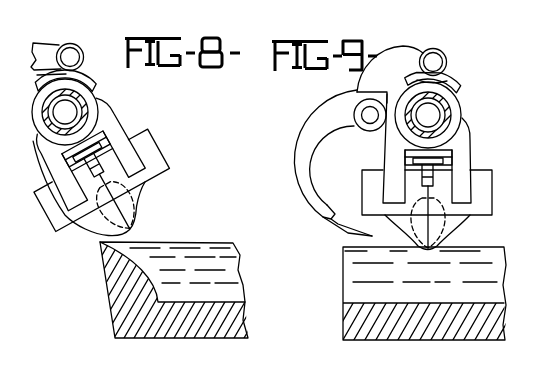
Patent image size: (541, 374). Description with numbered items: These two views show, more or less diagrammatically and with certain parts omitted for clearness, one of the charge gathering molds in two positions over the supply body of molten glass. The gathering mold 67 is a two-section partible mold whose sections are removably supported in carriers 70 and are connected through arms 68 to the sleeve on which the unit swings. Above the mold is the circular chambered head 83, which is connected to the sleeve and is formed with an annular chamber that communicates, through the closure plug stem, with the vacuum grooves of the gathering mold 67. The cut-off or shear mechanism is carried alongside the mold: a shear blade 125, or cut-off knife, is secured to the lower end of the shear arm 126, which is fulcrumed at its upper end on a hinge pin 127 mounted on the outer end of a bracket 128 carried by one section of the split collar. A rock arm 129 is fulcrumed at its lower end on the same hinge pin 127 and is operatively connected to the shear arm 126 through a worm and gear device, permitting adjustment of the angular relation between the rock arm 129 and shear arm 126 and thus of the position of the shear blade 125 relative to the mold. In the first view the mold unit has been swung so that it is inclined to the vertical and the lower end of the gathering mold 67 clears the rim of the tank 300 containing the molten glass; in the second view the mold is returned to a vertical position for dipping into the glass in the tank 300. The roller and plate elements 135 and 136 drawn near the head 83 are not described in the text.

In FIG. 8, the gathering mold 67 is at (150, 190).
In FIG. 9, the gathering mold 67 is at (458, 224).
In FIG. 8, the arms 68 is at (122, 126).
In FIG. 9, the arms 68 is at (467, 158).
In FIG. 8, the carriers 70 is at (156, 142).
In FIG. 9, the carriers 70 is at (366, 174).
In FIG. 8, the head 83 is at (96, 105).
In FIG. 9, the head 83 is at (459, 112).
In FIG. 9, the shear blade 125 is at (352, 200).
In FIG. 9, the shear arm 126 is at (298, 155).
In FIG. 9, the hinge pin 127 is at (371, 124).
In FIG. 9, the bracket 128 is at (356, 94).
In FIG. 8, the rock arm 129 is at (43, 47).
In FIG. 9, the rock arm 129 is at (414, 46).
In FIG. 8, the roller 135 is at (80, 47).
In FIG. 9, the roller 135 is at (444, 55).
In FIG. 8, the plate 136 is at (86, 82).
In FIG. 9, the plate 136 is at (452, 80).
In FIG. 8, the tank 300 is at (246, 312).
In FIG. 9, the tank 300 is at (342, 318).